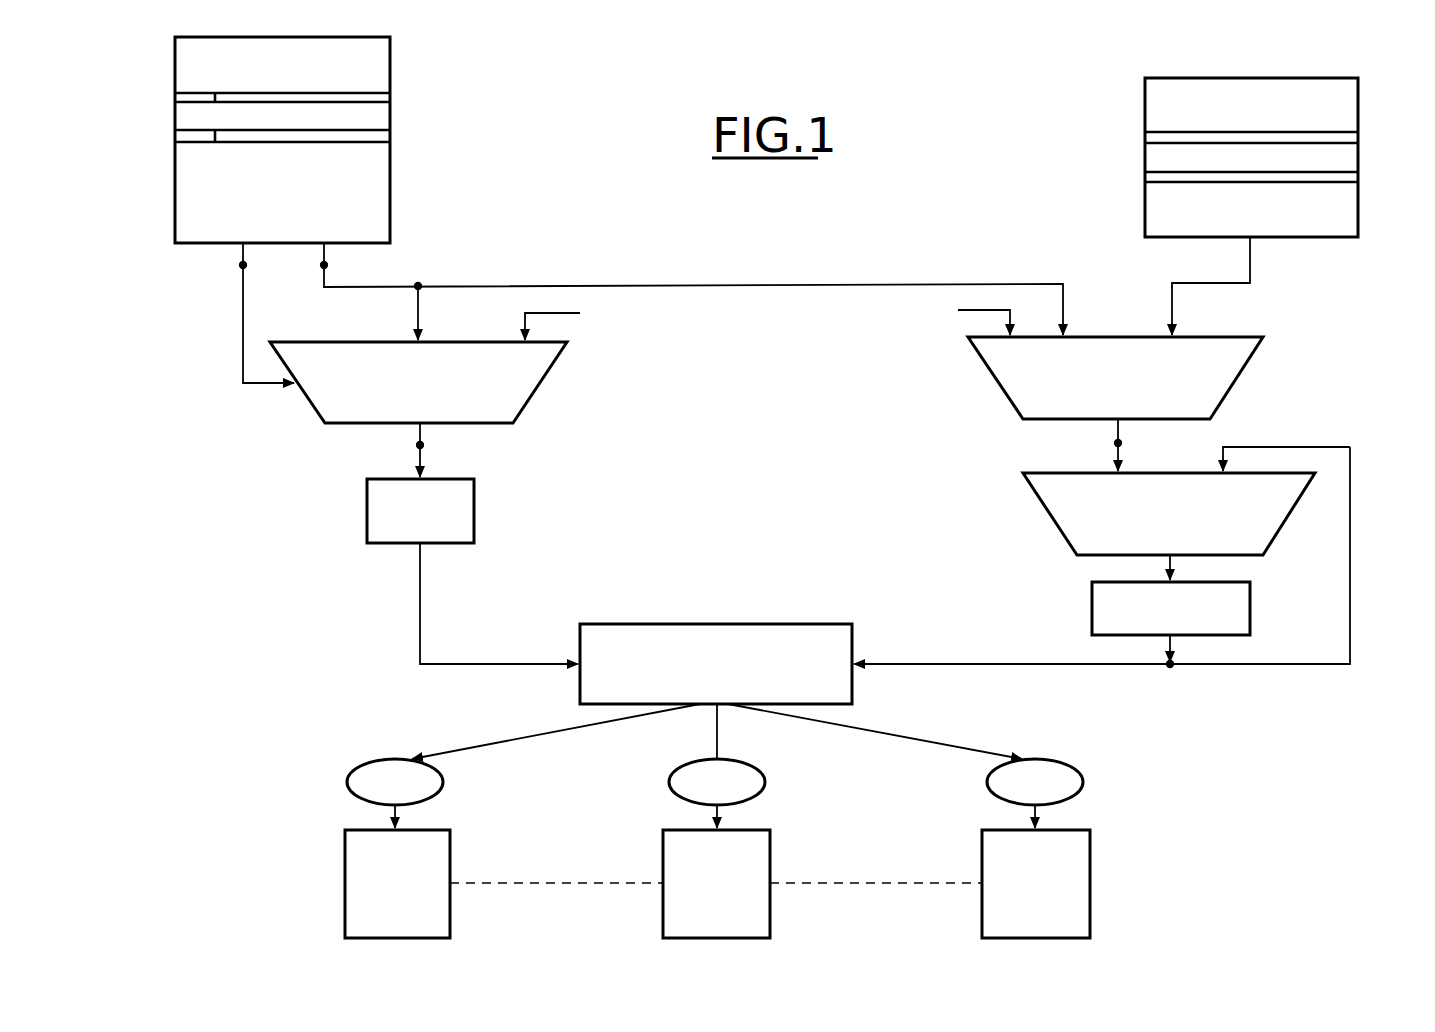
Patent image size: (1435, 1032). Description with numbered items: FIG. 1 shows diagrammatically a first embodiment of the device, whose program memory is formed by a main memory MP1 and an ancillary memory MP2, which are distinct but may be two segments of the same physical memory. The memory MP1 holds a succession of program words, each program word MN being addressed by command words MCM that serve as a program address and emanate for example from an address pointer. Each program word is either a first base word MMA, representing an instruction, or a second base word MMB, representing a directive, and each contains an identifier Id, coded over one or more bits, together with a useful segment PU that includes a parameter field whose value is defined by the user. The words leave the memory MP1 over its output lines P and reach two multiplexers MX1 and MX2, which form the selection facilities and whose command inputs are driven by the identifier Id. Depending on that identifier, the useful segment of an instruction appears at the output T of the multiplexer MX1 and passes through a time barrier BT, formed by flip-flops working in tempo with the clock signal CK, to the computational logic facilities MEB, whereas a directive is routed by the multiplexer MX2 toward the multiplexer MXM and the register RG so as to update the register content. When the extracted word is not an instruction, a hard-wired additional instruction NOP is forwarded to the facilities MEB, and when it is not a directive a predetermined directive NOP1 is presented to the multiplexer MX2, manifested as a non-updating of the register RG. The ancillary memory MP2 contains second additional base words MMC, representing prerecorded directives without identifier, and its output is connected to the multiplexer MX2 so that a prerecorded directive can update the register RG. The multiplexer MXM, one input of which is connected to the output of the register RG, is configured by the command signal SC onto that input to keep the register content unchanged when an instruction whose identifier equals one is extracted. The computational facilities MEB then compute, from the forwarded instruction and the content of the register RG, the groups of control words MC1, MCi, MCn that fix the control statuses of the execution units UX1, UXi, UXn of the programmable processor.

The main memory MP1 is at (394, 72).
The ancillary memory MP2 is at (1142, 113).
The memory word MN is at (306, 89).
The command words MCM is at (392, 98).
The first base word MMA is at (368, 103).
The second base word MMB is at (368, 142).
The second additional base words MMC is at (1163, 144).
The useful segment PU is at (237, 93).
The identifier Id is at (201, 95).
The program bus P is at (324, 266).
The multiplexer MX1 is at (418, 382).
The multiplexer MX2 is at (1115, 378).
The multiplexer MXM is at (1169, 514).
The pre-established additional instruction NOP is at (582, 319).
The predetermined directive NOP1 is at (948, 315).
The multiplexer output T is at (420, 445).
The time barrier BT is at (474, 512).
The clock signal CK is at (365, 511).
The command signal SC is at (1048, 517).
The register RG is at (1250, 607).
The computational logic facilities MEB is at (716, 664).
The control word MC1 is at (395, 782).
The control word MCi is at (717, 782).
The control word MCn is at (1035, 782).
The execution unit UX1 is at (397, 884).
The unit i UXi is at (716, 884).
The execution unit UXn is at (1036, 884).